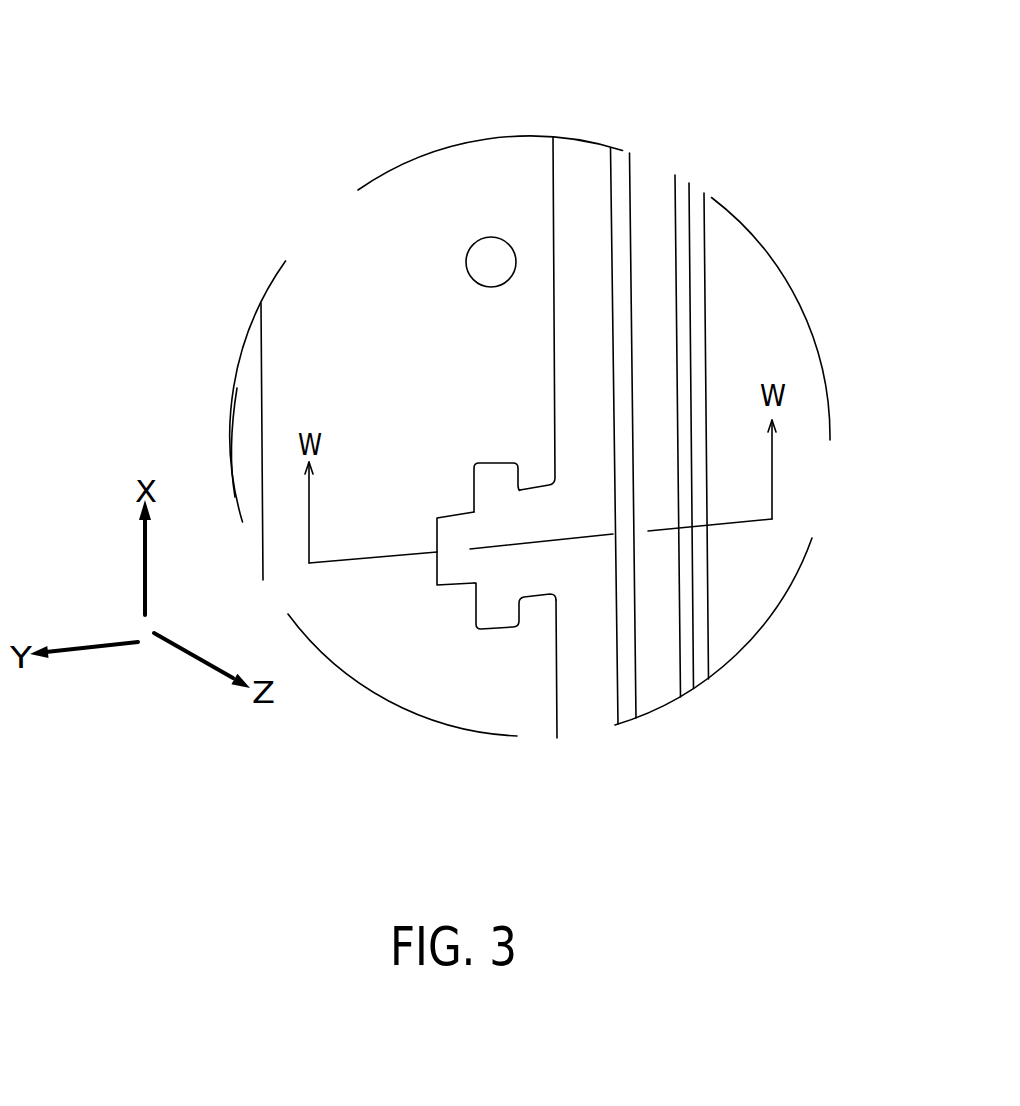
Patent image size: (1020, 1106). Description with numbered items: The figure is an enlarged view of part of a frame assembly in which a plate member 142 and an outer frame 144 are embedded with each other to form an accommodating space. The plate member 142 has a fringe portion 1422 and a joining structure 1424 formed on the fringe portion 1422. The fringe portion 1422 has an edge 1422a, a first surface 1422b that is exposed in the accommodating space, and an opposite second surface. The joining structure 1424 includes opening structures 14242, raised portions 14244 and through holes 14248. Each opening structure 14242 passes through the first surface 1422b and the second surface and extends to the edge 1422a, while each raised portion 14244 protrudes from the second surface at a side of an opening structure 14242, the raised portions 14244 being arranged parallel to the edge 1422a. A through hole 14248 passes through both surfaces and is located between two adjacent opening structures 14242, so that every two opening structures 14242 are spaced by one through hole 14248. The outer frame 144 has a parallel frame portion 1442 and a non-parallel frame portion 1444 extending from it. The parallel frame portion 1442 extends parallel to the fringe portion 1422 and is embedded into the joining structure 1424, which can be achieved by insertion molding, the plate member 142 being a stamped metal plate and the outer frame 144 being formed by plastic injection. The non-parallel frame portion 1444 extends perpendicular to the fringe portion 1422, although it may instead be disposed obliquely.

The plate member 142 is at (530, 489).
The fringe portion 1422 is at (423, 672).
The edge 1422a is at (556, 381).
The first surface 1422b is at (426, 389).
The joining structure 1424 is at (557, 57).
The raised portion 14244 is at (436, 521).
The opening structure 14242 is at (492, 460).
The through hole 14248 is at (502, 237).
The outer frame 144 is at (724, 492).
The parallel frame portion 1442 is at (587, 695).
The non-parallel frame portion 1444 is at (659, 568).